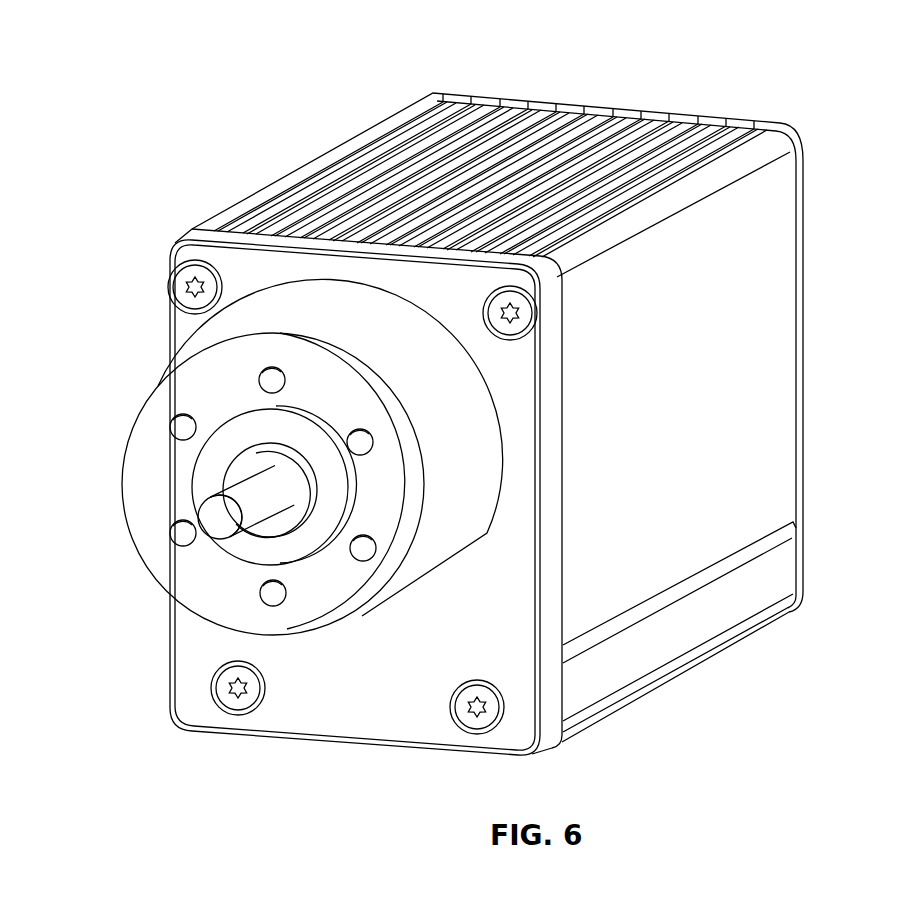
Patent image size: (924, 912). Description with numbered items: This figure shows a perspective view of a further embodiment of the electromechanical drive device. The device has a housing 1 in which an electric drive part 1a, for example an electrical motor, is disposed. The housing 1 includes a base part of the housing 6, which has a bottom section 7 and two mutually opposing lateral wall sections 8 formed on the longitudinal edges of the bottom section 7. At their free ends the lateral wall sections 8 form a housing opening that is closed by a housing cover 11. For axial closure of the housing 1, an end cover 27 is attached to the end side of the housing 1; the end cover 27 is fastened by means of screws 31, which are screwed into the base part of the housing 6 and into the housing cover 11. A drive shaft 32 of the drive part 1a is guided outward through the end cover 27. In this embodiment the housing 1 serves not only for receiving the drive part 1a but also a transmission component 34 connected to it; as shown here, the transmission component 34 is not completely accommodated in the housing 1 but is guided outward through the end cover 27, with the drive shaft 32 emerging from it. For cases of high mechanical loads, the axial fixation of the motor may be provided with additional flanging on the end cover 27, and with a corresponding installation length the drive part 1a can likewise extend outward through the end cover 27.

The housing 1 is at (232, 141).
The electric drive part 1a is at (273, 316).
The base part of the housing 6 is at (783, 195).
The bottom section 7 is at (770, 125).
The lateral wall section 8 is at (750, 362).
The housing cover 11 is at (715, 605).
The end cover 27 is at (797, 293).
The screw 31 is at (237, 685).
The drive shaft 32 is at (210, 525).
The transmission component 34 is at (162, 435).